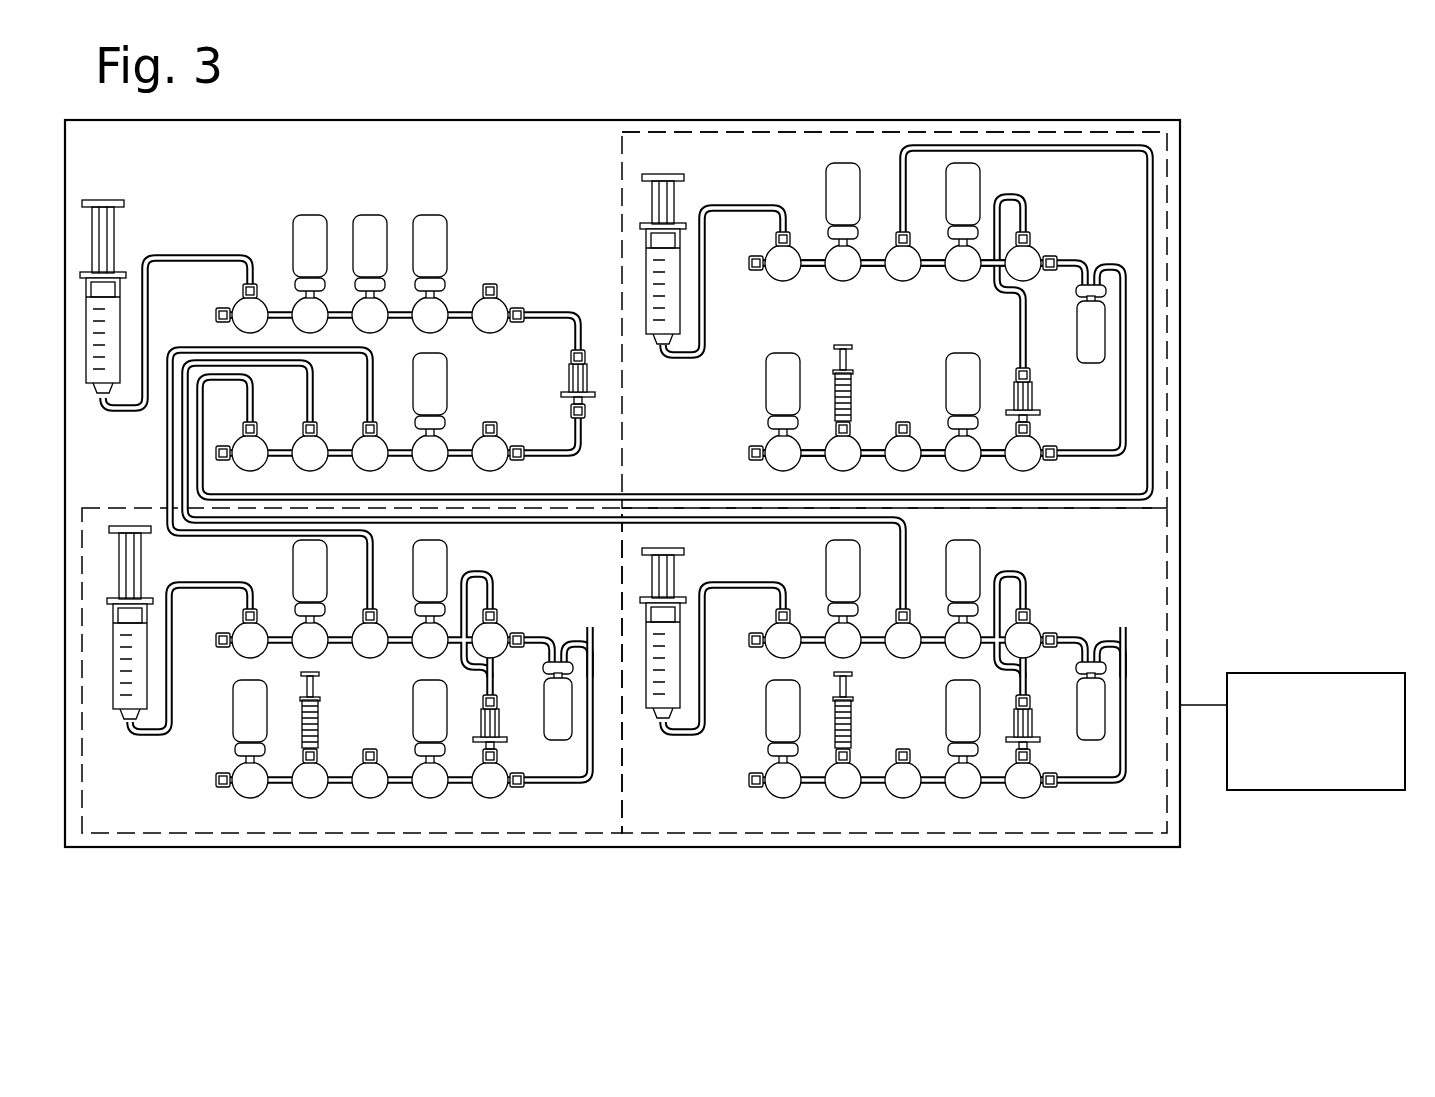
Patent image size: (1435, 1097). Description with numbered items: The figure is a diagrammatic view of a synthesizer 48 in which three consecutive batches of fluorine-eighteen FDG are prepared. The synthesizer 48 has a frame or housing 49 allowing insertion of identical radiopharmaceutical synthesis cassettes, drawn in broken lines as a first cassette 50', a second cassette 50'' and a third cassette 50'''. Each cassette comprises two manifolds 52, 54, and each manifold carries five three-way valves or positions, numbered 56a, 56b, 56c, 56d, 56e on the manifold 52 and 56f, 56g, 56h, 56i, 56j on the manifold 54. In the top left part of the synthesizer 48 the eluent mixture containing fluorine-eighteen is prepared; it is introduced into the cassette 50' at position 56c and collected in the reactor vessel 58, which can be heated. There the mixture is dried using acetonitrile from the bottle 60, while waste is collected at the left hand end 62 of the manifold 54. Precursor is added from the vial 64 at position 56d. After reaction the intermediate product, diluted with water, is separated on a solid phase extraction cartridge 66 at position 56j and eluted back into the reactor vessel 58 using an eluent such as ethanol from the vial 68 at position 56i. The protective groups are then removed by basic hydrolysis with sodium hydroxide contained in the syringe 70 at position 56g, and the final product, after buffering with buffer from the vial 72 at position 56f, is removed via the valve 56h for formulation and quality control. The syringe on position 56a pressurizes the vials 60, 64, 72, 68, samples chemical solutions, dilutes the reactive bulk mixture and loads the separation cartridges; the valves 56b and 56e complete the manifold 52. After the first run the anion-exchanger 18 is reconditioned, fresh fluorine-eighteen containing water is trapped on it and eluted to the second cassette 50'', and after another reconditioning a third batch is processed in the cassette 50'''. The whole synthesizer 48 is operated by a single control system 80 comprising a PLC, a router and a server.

The anion-exchanger 18 is at (578, 385).
The synthesizer 48 is at (1205, 183).
The frame or housing 49 is at (1072, 128).
The cassette 50' is at (894, 291).
The cassette 50'' is at (941, 670).
The cassette 50''' is at (352, 696).
The manifold 52 is at (885, 252).
The manifold 54 is at (988, 458).
The 3way valve 56a is at (786, 278).
The 3way valve 56b is at (852, 278).
The 3way valve 56c is at (905, 278).
The 3way valve 56d is at (970, 278).
The 3way valve 56e is at (1025, 260).
The 3way valve 56f is at (784, 465).
The 3way valve 56g is at (845, 465).
The 3way valve 56h is at (905, 465).
The 3way valve 56i is at (965, 465).
The 3way valve 56j is at (1026, 465).
The reactor vessel 58 is at (1092, 320).
The bottle 60 is at (838, 187).
The left hand end 62 is at (757, 455).
The vial 64 is at (970, 188).
The solid phase extraction cartridge 66 is at (1030, 400).
The vial 68 is at (960, 378).
The syringe 70 is at (848, 408).
The vial 72 is at (780, 380).
The control system 80 is at (1270, 742).